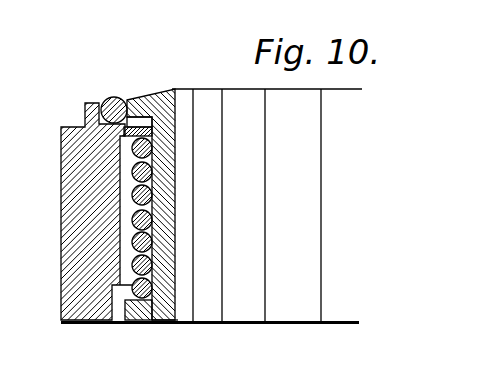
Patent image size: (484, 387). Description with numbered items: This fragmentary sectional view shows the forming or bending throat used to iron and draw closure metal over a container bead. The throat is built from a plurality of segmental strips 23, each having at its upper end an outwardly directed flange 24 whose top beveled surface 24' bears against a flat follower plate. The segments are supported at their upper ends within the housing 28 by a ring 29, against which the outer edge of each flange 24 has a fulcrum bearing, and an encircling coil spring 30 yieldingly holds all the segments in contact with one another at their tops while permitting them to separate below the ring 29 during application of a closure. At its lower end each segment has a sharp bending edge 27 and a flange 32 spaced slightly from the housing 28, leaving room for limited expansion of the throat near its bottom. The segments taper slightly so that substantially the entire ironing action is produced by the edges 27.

The segmental strips 23 is at (282, 310).
The outwardly directed flange 24 is at (119, 89).
The top beveled surface 24' is at (168, 186).
The lower edge 27 is at (163, 325).
The housing 28 is at (70, 208).
The ring 29 is at (62, 150).
The coil spring 30 is at (132, 243).
The flange 32 is at (153, 302).